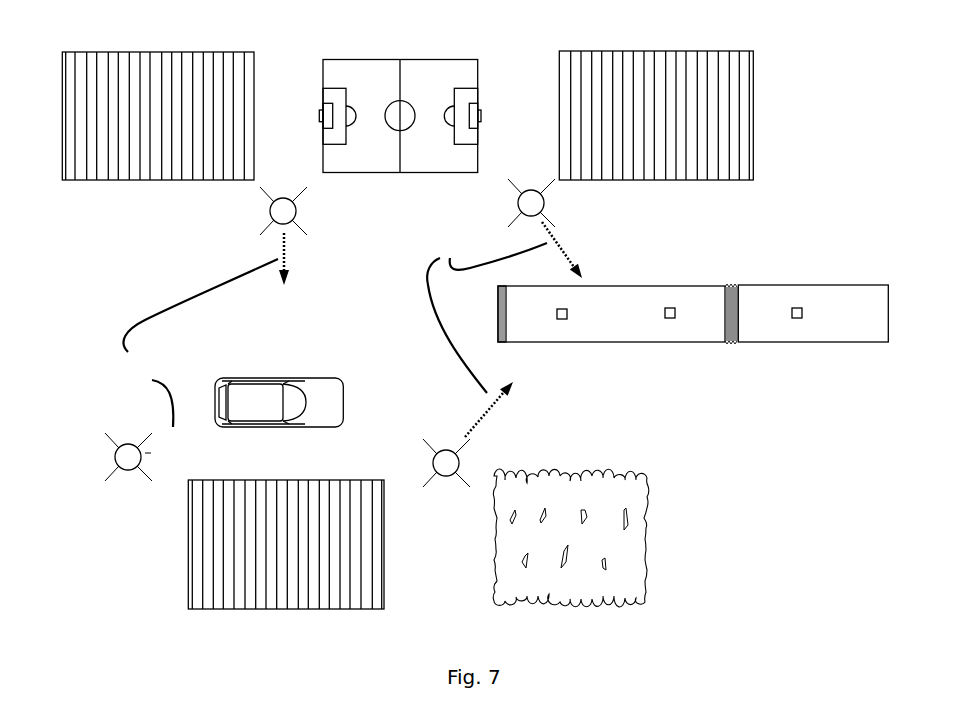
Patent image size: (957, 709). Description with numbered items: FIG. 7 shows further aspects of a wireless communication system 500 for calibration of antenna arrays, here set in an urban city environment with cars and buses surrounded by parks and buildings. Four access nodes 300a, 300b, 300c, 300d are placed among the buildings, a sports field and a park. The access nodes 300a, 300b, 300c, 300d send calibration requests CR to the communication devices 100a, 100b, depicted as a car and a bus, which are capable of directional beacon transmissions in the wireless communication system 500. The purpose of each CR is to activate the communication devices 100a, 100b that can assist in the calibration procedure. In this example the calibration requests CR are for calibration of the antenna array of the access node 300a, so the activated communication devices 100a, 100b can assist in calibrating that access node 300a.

The wireless communication system 500 is at (675, 31).
The access node 300a is at (258, 222).
The access node 300b is at (560, 205).
The access node 300c is at (103, 462).
The access node 300d is at (465, 463).
The communication device 100a is at (353, 395).
The communication device 100b is at (627, 285).
The calibration request CR is at (335, 334).